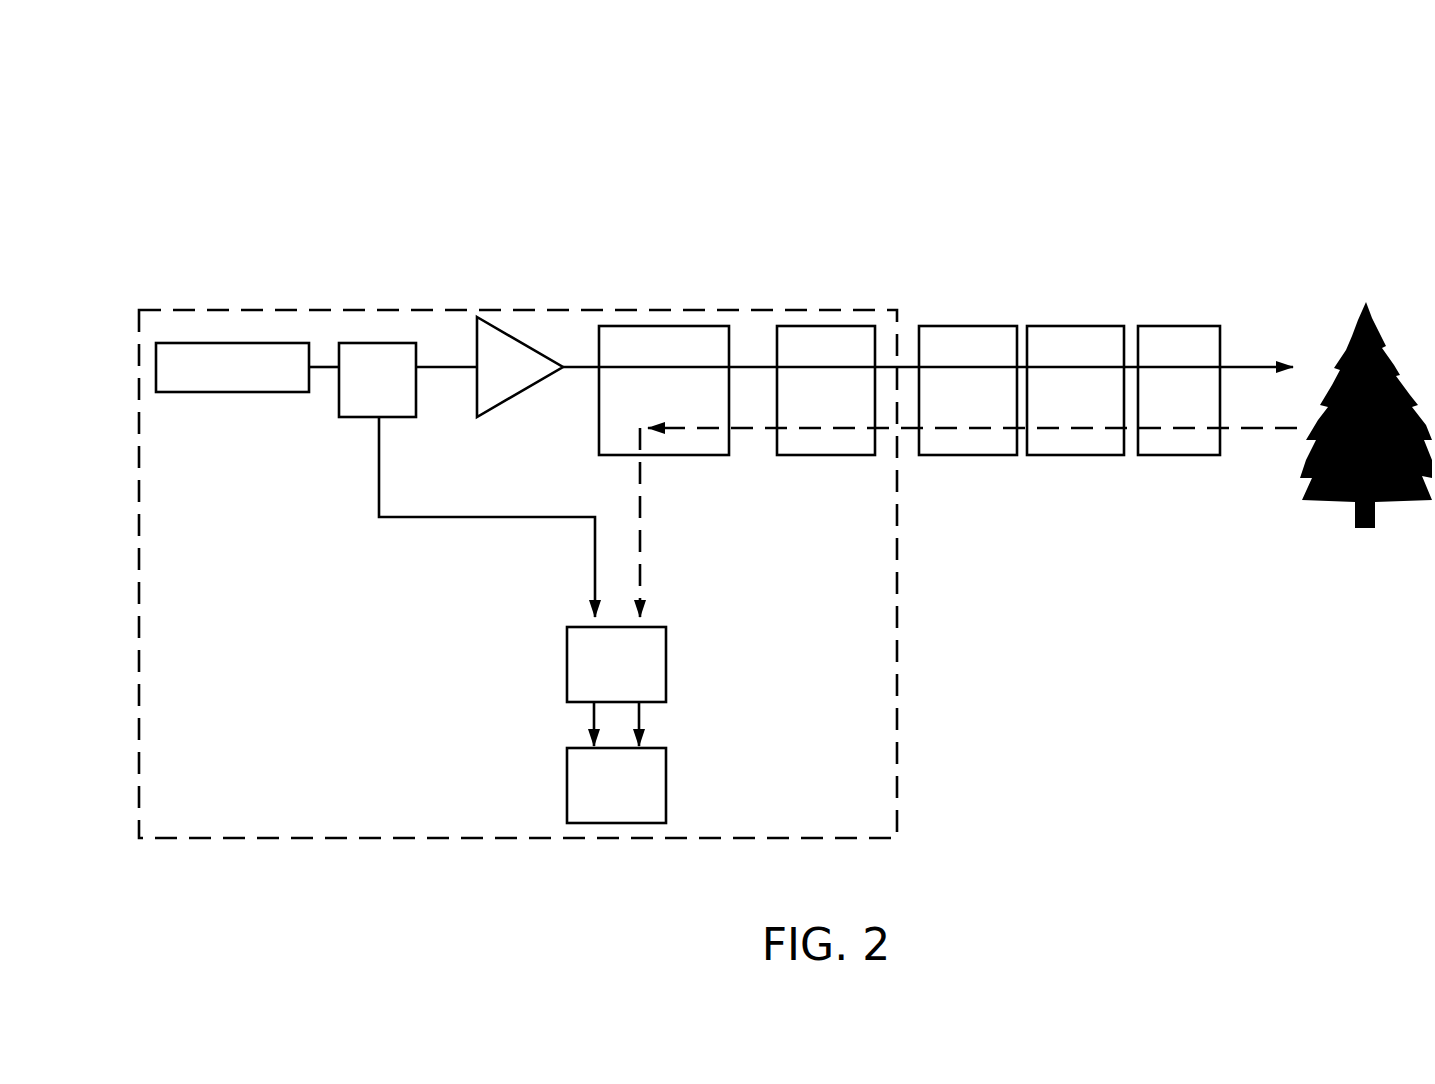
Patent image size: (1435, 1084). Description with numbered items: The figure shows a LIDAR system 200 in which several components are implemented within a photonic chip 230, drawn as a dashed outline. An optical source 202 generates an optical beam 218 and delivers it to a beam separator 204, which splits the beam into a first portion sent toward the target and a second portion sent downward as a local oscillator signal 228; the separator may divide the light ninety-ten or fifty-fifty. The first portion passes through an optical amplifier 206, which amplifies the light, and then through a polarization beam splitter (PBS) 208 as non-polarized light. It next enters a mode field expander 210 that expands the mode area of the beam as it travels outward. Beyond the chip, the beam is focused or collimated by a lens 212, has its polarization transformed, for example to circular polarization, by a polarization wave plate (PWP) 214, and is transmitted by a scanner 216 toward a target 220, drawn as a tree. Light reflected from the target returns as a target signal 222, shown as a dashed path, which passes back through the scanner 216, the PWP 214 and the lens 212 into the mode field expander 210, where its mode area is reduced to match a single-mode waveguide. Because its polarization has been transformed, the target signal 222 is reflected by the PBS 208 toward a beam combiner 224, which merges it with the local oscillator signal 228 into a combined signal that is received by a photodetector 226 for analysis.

The LIDAR system 200 is at (192, 100).
The optical source 202 is at (270, 341).
The beam separator 204 is at (335, 412).
The optical amplifier 206 is at (478, 317).
The polarization beam splitter (PBS) 208 is at (630, 326).
The mode field expander 210 is at (805, 326).
The lens 212 is at (940, 326).
The polarization wave plate (PWP) 214 is at (1052, 326).
The scanner 216 is at (1143, 462).
The optical beam 218 is at (1240, 365).
The target 220 is at (1348, 510).
The target signal 222 is at (1258, 434).
The beam combiner 224 is at (563, 652).
The photodetector 226 is at (563, 785).
The local oscillator signal 228 is at (375, 520).
The photonic chip 230 is at (518, 574).